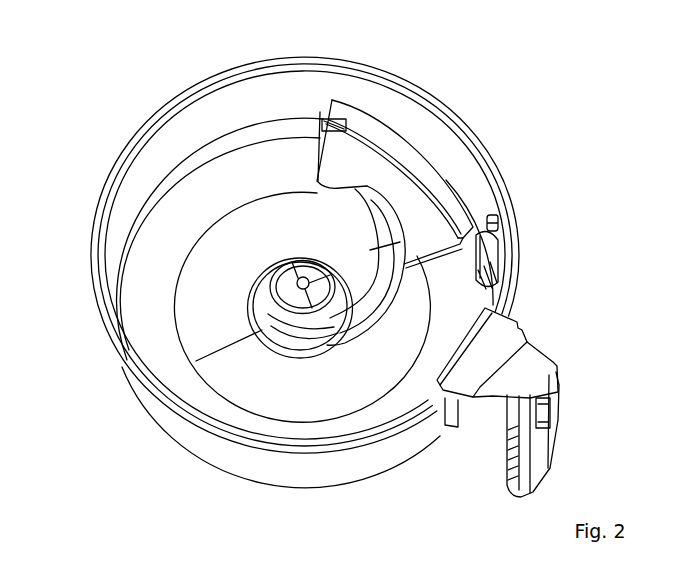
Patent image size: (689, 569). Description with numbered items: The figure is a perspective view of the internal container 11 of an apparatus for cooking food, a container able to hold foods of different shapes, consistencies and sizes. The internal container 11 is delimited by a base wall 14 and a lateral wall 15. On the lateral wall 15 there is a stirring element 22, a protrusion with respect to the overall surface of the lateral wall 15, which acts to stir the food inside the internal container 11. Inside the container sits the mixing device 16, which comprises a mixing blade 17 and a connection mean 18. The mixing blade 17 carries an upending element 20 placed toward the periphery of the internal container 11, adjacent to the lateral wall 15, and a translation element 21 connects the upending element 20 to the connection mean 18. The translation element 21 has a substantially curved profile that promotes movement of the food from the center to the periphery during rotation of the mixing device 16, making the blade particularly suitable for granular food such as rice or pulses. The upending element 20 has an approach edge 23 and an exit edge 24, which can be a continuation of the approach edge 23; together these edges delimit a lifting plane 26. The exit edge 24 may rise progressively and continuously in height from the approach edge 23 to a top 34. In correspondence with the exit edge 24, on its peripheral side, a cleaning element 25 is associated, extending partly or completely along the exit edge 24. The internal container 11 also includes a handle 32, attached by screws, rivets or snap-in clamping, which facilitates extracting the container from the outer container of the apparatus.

The internal container 11 is at (521, 177).
The base wall 14 is at (208, 408).
The lateral wall 15 is at (437, 139).
The mixing device 16 is at (221, 275).
The mixing blade 17 is at (376, 339).
The connection mean 18 is at (266, 301).
The upending element 20 is at (312, 127).
The translation element 21 is at (407, 301).
The stirring element 22 is at (498, 221).
The approach edge 23 is at (482, 260).
The exit edge 24 is at (343, 127).
The cleaning element 25 is at (373, 116).
The lifting plane 26 is at (405, 209).
The handle 32 is at (551, 438).
The top 34 is at (327, 121).